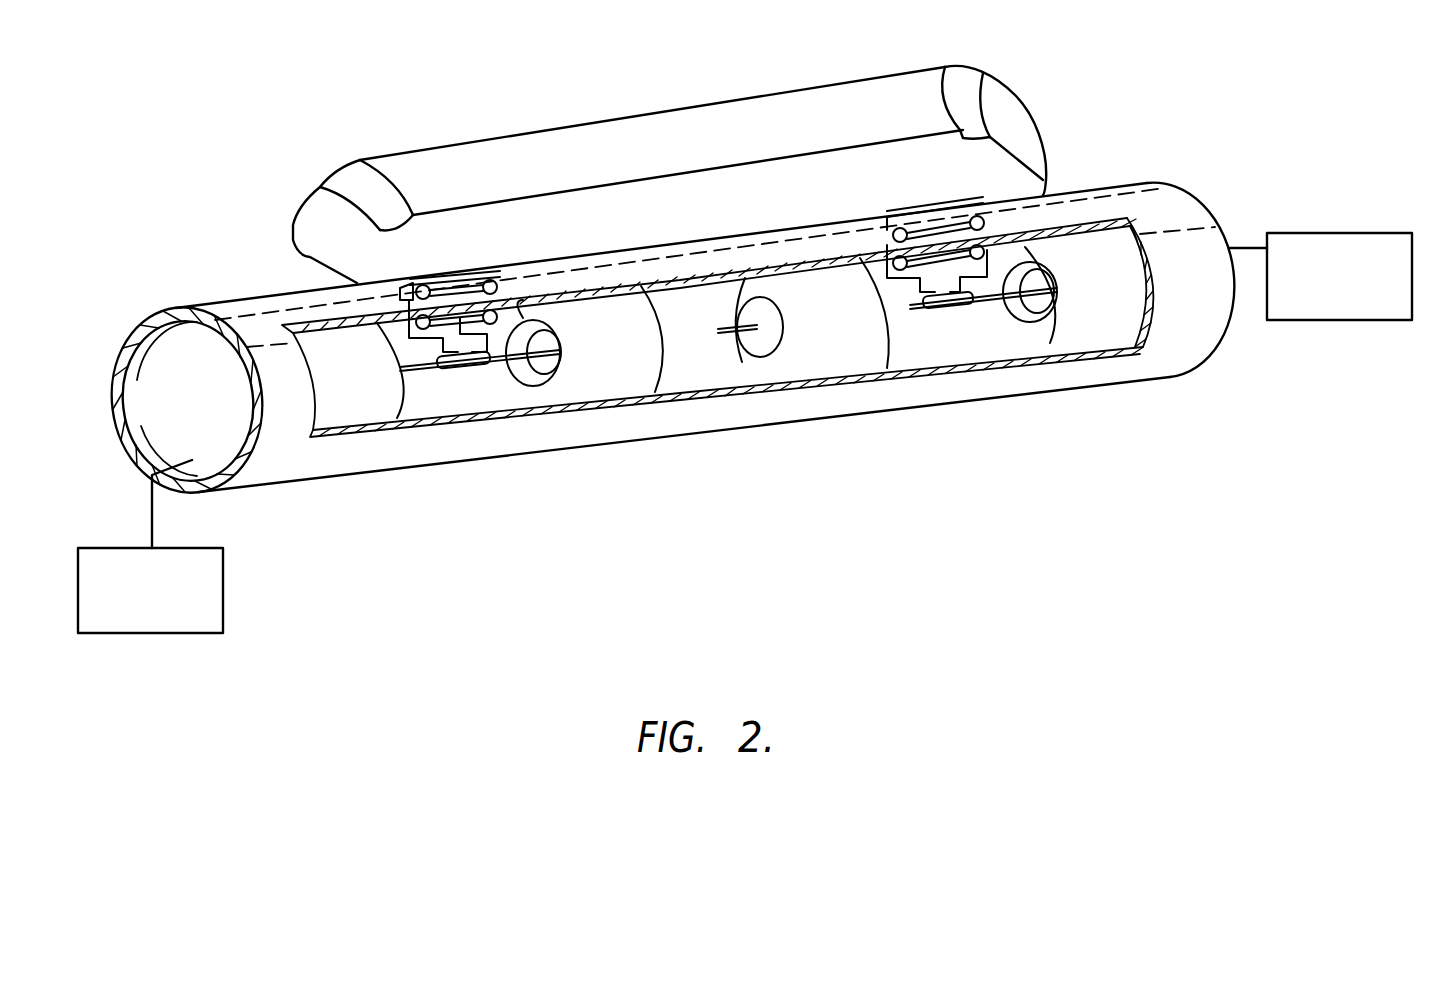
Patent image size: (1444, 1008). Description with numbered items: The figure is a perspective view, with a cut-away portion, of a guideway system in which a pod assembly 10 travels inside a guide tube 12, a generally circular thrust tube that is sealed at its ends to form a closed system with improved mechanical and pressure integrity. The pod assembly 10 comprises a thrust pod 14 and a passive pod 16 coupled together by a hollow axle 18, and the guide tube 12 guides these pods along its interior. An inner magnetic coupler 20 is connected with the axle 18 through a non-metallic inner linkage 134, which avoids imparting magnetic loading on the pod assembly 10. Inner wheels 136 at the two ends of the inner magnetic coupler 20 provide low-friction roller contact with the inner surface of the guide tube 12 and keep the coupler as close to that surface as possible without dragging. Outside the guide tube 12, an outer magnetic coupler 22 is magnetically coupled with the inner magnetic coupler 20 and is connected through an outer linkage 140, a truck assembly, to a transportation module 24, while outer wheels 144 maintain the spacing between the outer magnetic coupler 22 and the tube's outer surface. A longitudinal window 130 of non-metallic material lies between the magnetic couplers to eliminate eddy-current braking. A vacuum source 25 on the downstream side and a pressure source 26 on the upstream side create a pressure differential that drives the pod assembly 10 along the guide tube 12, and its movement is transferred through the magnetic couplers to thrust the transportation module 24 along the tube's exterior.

The pod assembly 10 is at (668, 316).
The guide tube 12 is at (332, 465).
The thrust pod 14 is at (400, 378).
The passive pod 16 is at (523, 398).
The axle 18 is at (503, 366).
The inner magnetic coupler 20 is at (475, 368).
The outer magnetic coupler 22 is at (450, 285).
The transportation module 24 is at (790, 90).
The vacuum source 25 is at (1380, 232).
The pressure source 26 is at (218, 548).
The longitudinal window 130 is at (1180, 193).
The inner linkage 134 is at (417, 333).
The inner wheels 136 is at (533, 320).
The outer linkage 140 is at (408, 283).
The outer wheels 144 is at (500, 282).